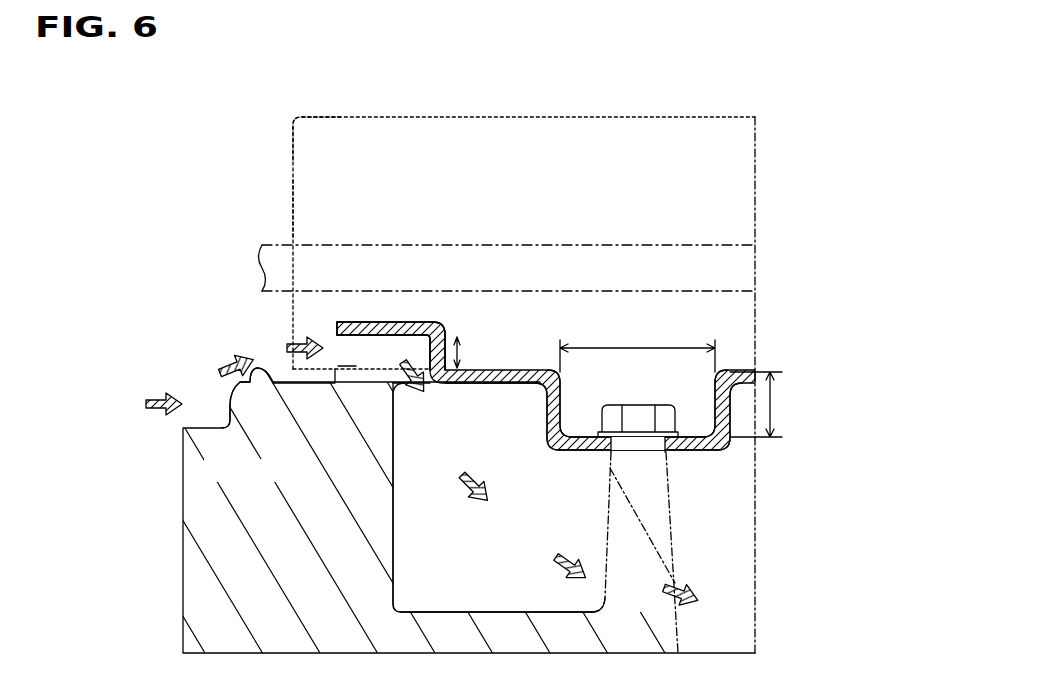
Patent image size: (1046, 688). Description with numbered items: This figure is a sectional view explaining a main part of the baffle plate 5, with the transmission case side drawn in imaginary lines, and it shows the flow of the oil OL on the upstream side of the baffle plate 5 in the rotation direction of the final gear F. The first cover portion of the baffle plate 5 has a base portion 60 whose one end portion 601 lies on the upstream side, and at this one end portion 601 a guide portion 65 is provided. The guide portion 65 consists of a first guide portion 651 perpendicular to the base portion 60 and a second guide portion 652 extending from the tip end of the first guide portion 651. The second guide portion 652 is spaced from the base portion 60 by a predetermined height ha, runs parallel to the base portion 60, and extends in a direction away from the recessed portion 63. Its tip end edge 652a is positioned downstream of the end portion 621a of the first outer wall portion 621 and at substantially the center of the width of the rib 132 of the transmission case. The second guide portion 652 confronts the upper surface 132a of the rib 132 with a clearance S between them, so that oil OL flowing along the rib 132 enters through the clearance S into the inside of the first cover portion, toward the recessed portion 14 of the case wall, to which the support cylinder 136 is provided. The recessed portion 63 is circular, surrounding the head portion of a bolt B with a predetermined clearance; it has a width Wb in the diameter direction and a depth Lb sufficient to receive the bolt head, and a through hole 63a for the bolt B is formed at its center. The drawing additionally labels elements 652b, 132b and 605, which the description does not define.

The baffle plate 5 is at (288, 147).
The first outer wall portion 621 is at (706, 137).
The end portion 621a is at (293, 209).
The final gear F is at (713, 245).
The base portion 60 is at (512, 370).
The guide portion 65 is at (457, 214).
The second guide portion 652 is at (357, 322).
The first guide portion 651 is at (434, 335).
The lower surface of horizontal portion 652b is at (420, 342).
The tip end edge 652a is at (336, 328).
The one end portion 601 is at (481, 384).
The predetermined height ha is at (473, 354).
The clearance S is at (347, 351).
The recessed portion 63 is at (598, 403).
The width Wb is at (637, 343).
The depth Lb is at (771, 404).
The through hole 63a is at (651, 460).
The bolt B is at (672, 414).
The rib 132 is at (277, 400).
The upper surface 132a is at (247, 384).
The upper surface of body side member 132b is at (250, 382).
The contact portion 605 is at (367, 383).
The oil OL is at (318, 380).
The recessed portion 14 is at (490, 612).
The support cylinder 136 is at (660, 538).